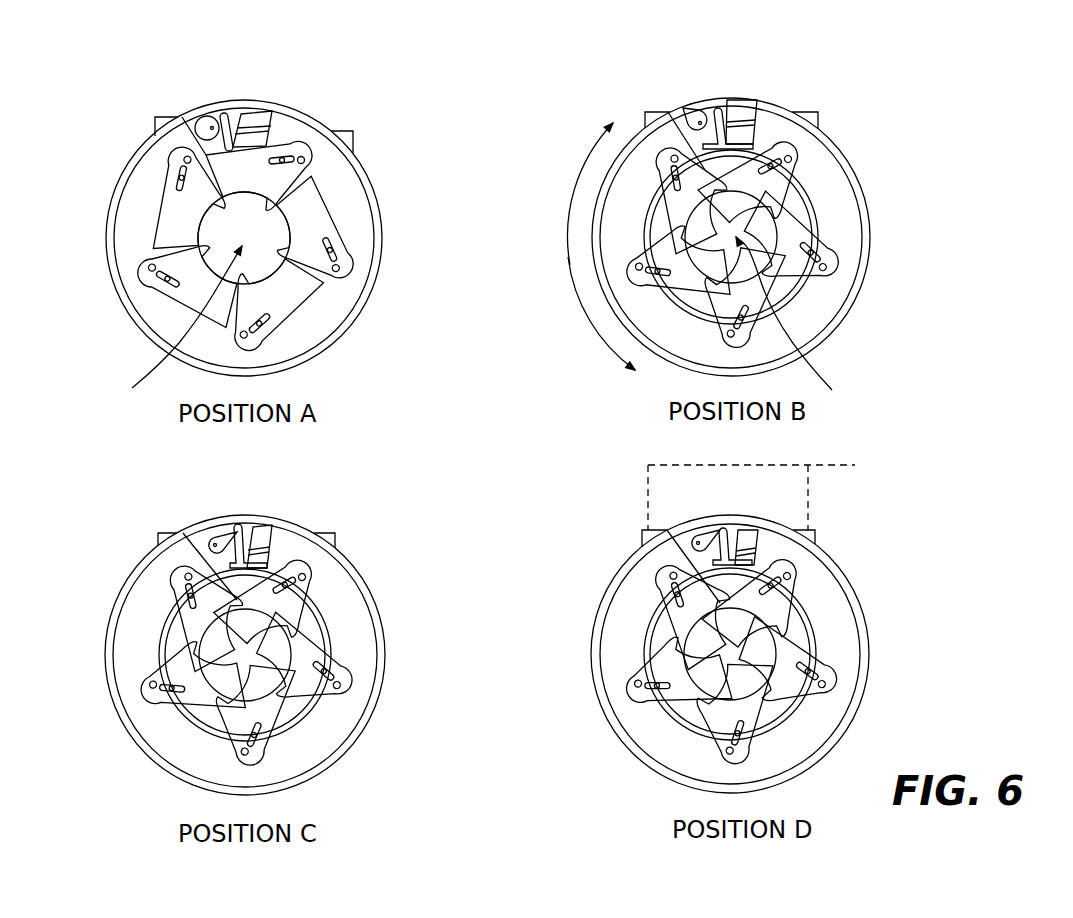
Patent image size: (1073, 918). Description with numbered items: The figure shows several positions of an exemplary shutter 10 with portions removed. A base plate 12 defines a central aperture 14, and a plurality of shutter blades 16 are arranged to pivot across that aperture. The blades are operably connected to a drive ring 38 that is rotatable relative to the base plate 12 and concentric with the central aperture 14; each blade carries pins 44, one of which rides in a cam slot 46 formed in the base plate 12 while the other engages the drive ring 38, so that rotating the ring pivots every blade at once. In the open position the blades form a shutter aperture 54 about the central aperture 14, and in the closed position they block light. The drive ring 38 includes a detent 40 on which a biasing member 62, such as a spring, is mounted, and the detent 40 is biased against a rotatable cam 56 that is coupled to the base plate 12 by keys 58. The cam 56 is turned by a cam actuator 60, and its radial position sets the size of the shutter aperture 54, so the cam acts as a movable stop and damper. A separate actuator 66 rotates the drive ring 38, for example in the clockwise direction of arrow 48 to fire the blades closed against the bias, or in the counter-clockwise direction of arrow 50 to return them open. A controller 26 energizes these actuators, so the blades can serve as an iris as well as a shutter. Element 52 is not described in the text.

The shutter 10 is at (116, 126).
The base plate 12 is at (271, 238).
The central aperture 14 is at (279, 248).
The shutter blades 16 is at (497, 446).
The controller 26 is at (772, 488).
The drive ring 38 is at (543, 445).
The detent 40 is at (510, 308).
The pins 44 is at (384, 255).
The cam slot 46 is at (375, 274).
The arrow (clockwise direction) 48 is at (553, 194).
The arrow (counter-clockwise direction) 50 is at (565, 313).
The pivot 52 is at (371, 299).
The shutter aperture 54 is at (479, 322).
The cam 56 is at (433, 302).
The keys 58 is at (182, 101).
The cam actuator 60 is at (380, 305).
The biasing member 62 is at (524, 320).
The actuator 66 is at (604, 315).